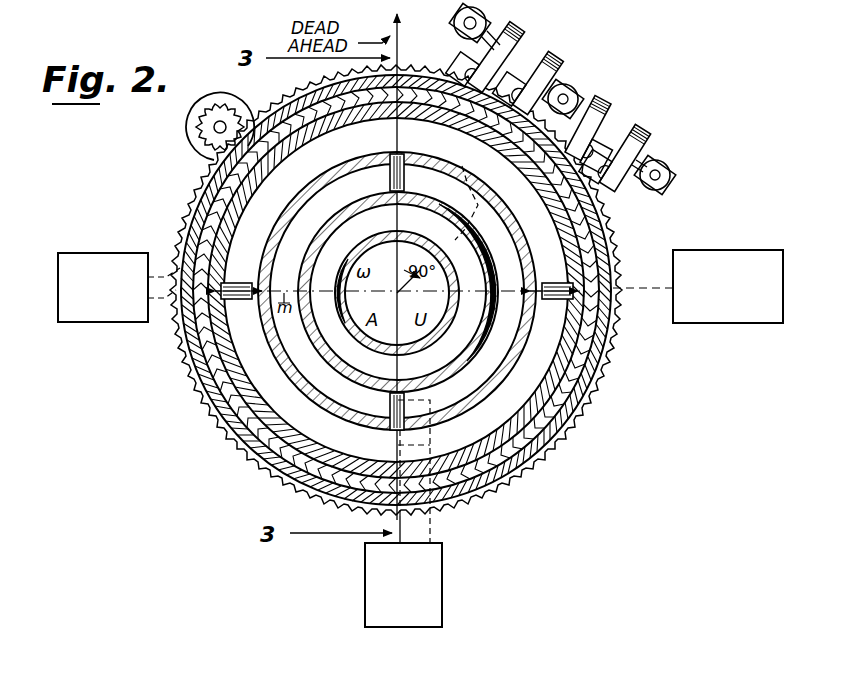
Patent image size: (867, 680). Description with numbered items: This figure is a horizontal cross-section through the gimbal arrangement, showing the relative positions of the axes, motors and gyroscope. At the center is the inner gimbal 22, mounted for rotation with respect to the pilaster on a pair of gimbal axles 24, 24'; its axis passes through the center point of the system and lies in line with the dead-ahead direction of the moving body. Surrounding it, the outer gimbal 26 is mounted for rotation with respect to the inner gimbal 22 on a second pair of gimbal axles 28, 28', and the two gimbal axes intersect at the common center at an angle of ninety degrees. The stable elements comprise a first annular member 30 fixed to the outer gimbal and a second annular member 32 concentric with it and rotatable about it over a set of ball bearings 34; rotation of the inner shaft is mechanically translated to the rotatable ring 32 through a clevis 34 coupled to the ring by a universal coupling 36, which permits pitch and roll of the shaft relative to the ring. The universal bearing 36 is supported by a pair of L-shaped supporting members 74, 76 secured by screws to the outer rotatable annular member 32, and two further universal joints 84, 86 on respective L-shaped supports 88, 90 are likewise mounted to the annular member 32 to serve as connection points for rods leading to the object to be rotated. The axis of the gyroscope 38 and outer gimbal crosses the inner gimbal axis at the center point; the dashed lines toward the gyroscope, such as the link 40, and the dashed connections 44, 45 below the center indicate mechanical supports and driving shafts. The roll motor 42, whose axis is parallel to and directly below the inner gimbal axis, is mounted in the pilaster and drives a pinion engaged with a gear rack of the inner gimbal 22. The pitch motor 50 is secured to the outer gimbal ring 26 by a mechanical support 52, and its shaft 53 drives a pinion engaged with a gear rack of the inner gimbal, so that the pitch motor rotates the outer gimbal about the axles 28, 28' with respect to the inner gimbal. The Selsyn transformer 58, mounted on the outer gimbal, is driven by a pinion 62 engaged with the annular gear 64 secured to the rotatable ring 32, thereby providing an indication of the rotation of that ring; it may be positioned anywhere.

The inner gimbal 22 is at (308, 355).
The gimbal axle 24 is at (397, 291).
The gimbal axle 24' is at (378, 411).
The outer gimbal 26 is at (283, 447).
The gimbal axle 28 is at (238, 313).
The gimbal axle 28' is at (554, 309).
The first annular member 30 is at (238, 427).
The second annular member 32 is at (203, 402).
The clevis 34 is at (466, 204).
The universal coupling 36 is at (572, 86).
The gyroscope 38 is at (728, 250).
The connection 40 is at (642, 287).
The roll motor 42 is at (442, 560).
The connection 44 is at (432, 438).
The connection 45 is at (398, 448).
The pitch motor 50 is at (120, 322).
The mechanical support 52 is at (160, 308).
The shaft 53 is at (155, 270).
The Selsyn transformer 58 is at (189, 106).
The pinion 62 is at (212, 125).
The annular gear 64 is at (186, 382).
The L-shaped supporting member 74 is at (556, 62).
The L-shaped supporting member 76 is at (603, 100).
The universal joint 84 is at (454, 26).
The universal joint 86 is at (668, 163).
The L-shaped support 88 is at (512, 36).
The L-shaped support 90 is at (638, 128).